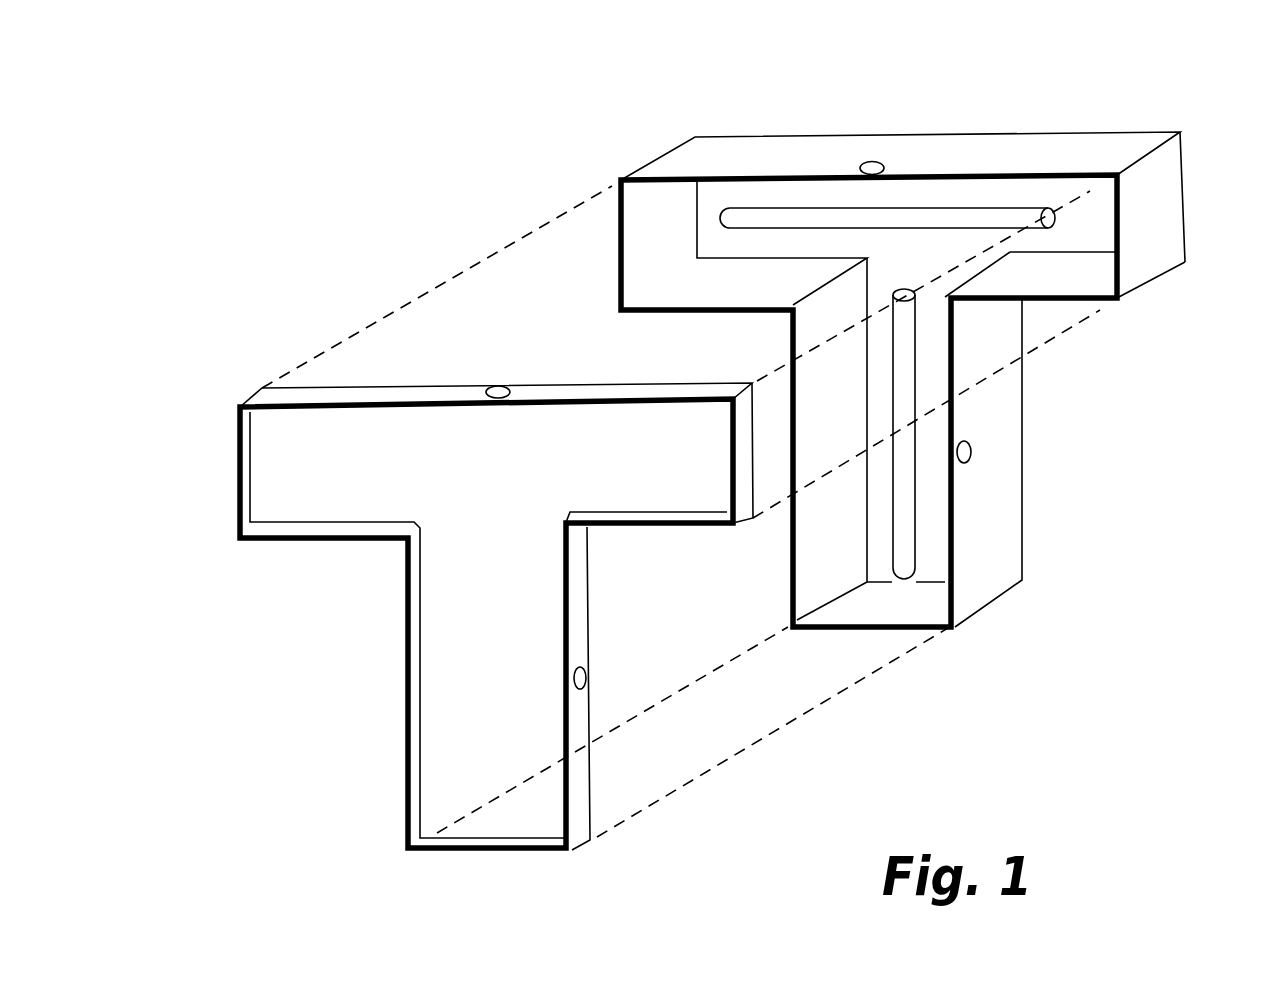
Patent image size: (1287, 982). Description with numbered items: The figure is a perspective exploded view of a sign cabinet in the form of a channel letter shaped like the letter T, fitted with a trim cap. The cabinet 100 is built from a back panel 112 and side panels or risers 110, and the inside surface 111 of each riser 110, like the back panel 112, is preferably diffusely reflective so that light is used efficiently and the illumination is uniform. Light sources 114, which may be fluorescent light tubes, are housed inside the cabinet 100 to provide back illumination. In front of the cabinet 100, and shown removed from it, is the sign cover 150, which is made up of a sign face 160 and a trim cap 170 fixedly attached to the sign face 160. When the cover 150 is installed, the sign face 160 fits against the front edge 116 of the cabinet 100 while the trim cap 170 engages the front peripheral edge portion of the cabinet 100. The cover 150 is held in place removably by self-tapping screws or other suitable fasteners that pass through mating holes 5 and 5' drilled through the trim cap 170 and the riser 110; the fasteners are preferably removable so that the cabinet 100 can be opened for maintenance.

The cabinet 100 is at (1122, 95).
The riser 110 is at (1003, 423).
The inside surface 111 is at (862, 538).
The back panel 112 is at (930, 272).
The light sources 114 is at (902, 363).
The front edge 116 is at (1118, 222).
The sign cover 150 is at (382, 652).
The sign face 160 is at (524, 522).
The trim cap 170 is at (587, 565).
The mating hole 5 is at (606, 597).
The mating hole 5' is at (906, 346).